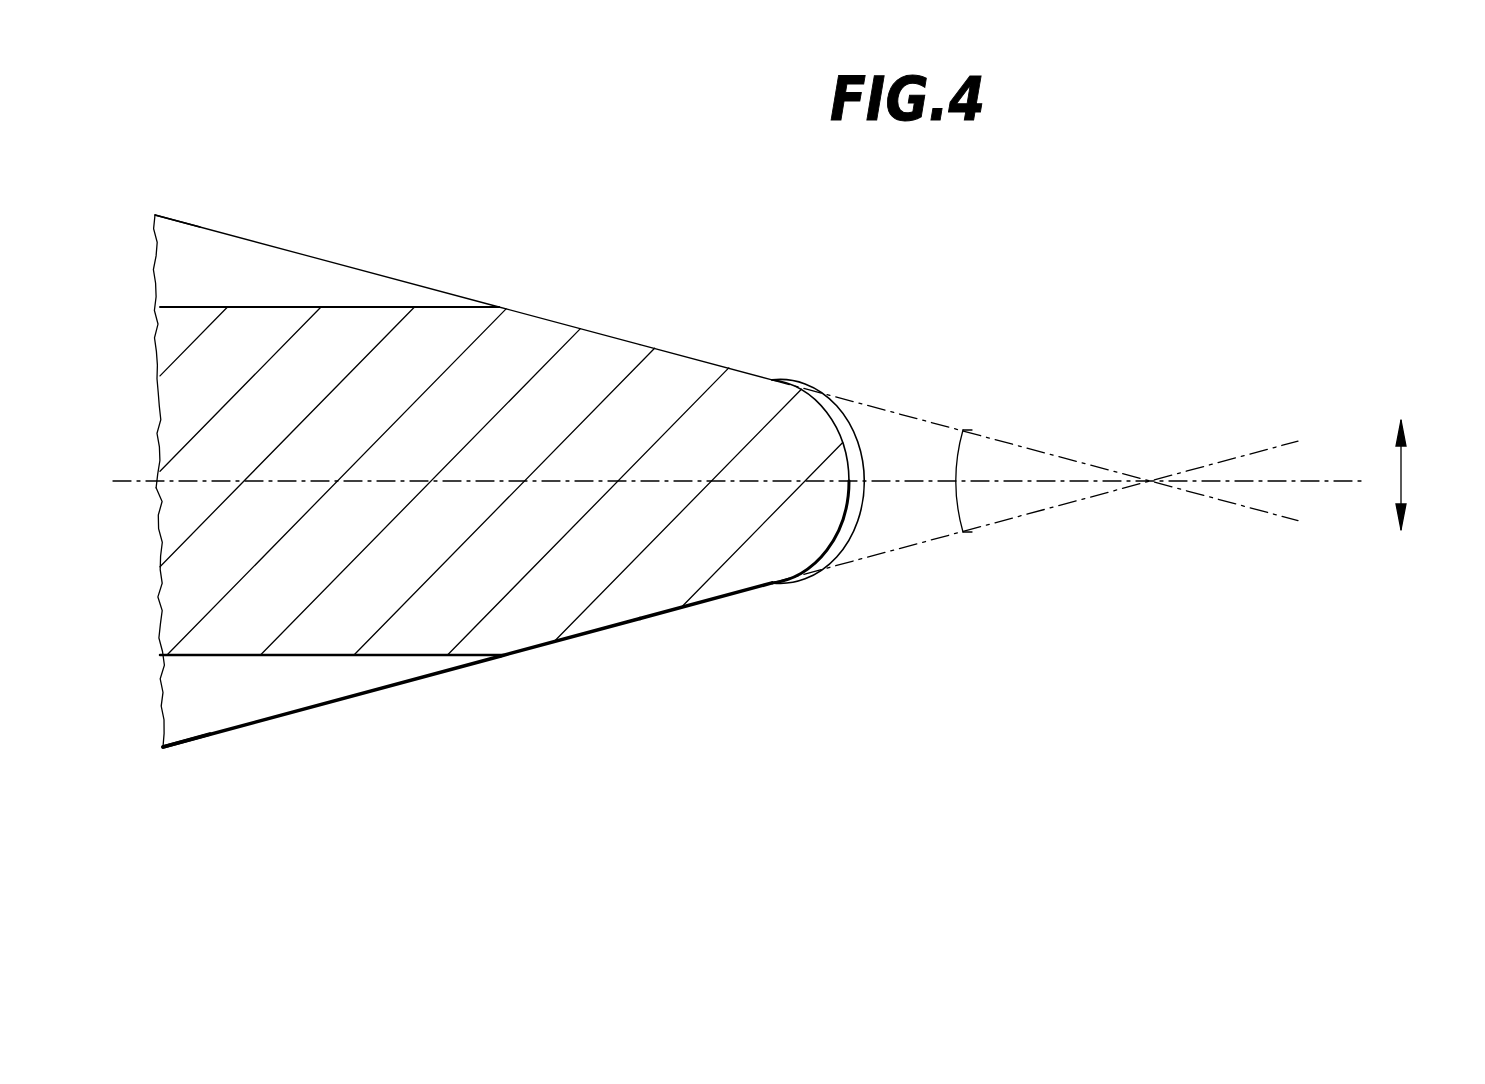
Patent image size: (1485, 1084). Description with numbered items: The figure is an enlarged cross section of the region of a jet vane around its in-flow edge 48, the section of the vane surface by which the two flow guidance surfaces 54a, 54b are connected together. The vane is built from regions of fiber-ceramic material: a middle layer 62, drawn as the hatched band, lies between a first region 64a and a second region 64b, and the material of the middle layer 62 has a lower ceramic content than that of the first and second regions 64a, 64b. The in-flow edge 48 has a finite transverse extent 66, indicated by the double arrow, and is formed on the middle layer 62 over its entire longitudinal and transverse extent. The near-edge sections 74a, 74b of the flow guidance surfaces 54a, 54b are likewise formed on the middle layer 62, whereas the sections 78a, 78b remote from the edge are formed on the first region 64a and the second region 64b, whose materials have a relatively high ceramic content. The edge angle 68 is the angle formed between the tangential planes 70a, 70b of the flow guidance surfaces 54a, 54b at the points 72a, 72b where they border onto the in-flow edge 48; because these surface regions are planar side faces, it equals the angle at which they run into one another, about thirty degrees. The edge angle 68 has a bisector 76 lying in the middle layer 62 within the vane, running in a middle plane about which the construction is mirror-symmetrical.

The in-flow edge 48 is at (851, 474).
The flow guidance surface 54a is at (302, 252).
The flow guidance surface 54b is at (323, 706).
The middle layer 62 is at (460, 531).
The first region 64a is at (403, 292).
The second region 64b is at (436, 667).
The transverse extent 66 is at (1403, 480).
The edge angle 68 is at (1022, 496).
The tangential plane 70a is at (1016, 445).
The tangential plane 70b is at (921, 542).
The point 72a is at (768, 379).
The point 72b is at (765, 590).
The near-edge section 74a is at (636, 341).
The near-edge section 74b is at (647, 620).
The bisector 76 is at (1328, 479).
The section remote from the edge 78a is at (199, 224).
The section remote from the edge 78b is at (207, 742).